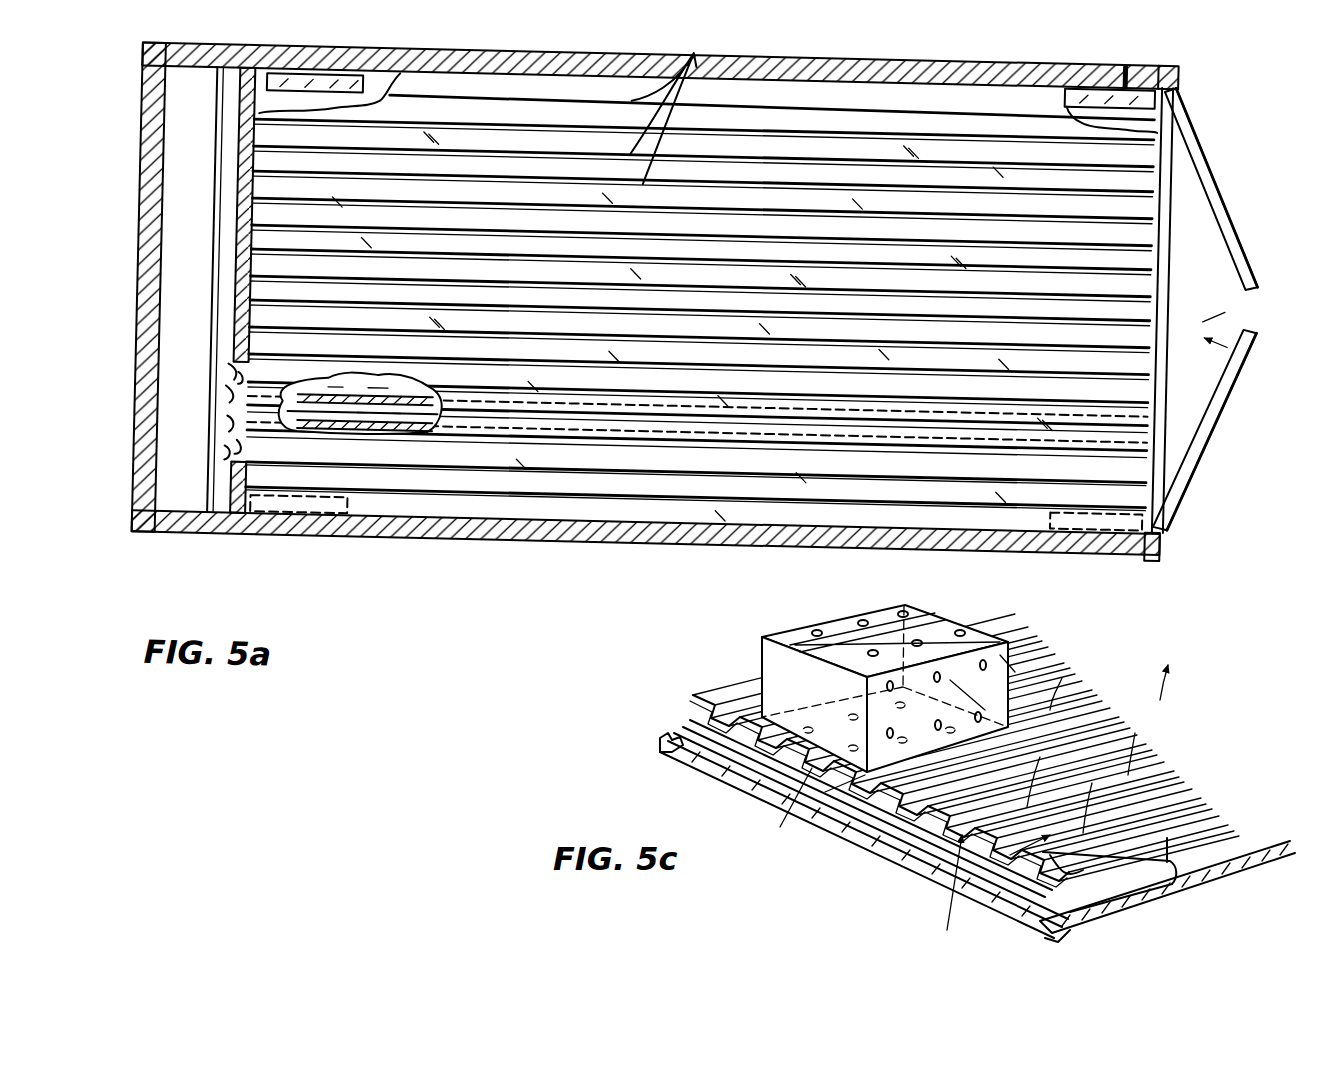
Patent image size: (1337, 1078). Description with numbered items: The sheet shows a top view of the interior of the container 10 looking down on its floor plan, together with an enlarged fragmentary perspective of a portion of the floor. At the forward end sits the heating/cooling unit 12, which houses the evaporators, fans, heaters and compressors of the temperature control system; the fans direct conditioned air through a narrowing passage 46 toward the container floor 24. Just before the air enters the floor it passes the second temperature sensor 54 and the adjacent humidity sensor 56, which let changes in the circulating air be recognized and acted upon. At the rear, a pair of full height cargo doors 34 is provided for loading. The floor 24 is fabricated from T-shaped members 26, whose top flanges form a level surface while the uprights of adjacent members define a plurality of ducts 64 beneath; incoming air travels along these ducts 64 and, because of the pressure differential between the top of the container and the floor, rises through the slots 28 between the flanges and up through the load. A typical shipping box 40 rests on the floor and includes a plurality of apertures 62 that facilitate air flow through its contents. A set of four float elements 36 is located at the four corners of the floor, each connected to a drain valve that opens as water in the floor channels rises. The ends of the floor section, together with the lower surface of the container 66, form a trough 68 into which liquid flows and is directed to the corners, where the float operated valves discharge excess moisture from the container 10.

In FIG. 5a, the container 10 is at (1245, 46).
In FIG. 5a, the heating/cooling unit 12 is at (176, 193).
In FIG. 5a, the container floor 24 is at (470, 506).
In FIG. 5c, the container floor 24 is at (1245, 811).
In FIG. 5a, the T-shaped member 26 is at (604, 478).
In FIG. 5c, the T-shaped member 26 is at (745, 700).
In FIG. 5a, the slot 28 is at (370, 570).
In FIG. 5c, the slot 28 is at (918, 798).
In FIG. 5a, the cargo door 34 is at (1243, 322).
In FIG. 5a, the float element 36 is at (298, 80).
In FIG. 5c, the shipping box 40 is at (875, 614).
In FIG. 5a, the narrowing passage 46 is at (226, 263).
In FIG. 5a, the second temperature sensor 54 is at (232, 452).
In FIG. 5a, the humidity sensor 56 is at (228, 376).
In FIG. 5c, the aperture 62 is at (950, 642).
In FIG. 5c, the duct 64 is at (901, 855).
In FIG. 5c, the lower surface of the container 66 is at (700, 756).
In FIG. 5c, the trough 68 is at (664, 744).